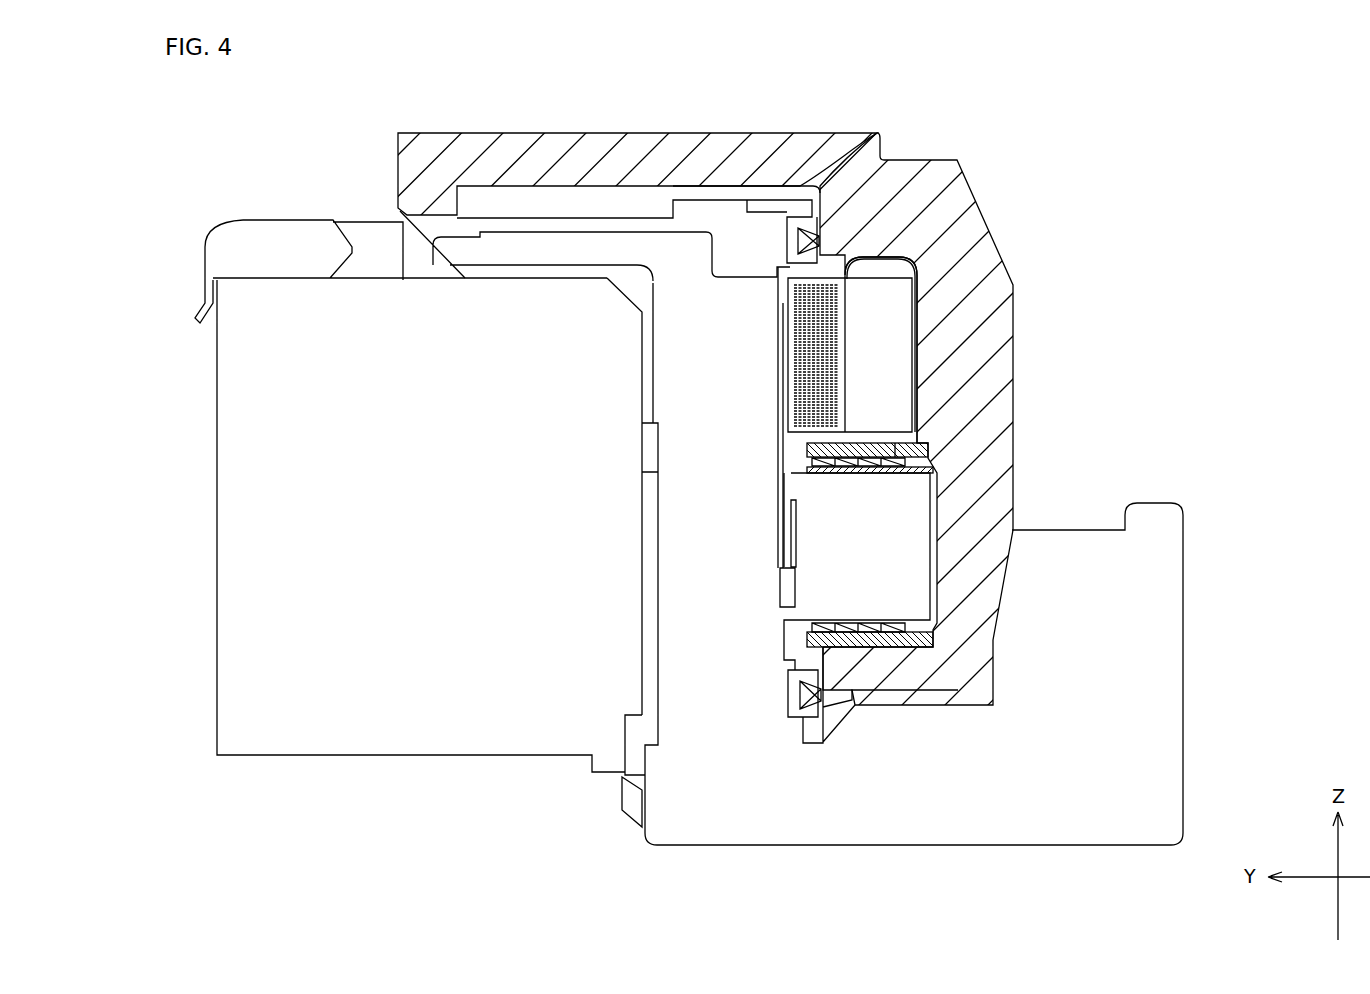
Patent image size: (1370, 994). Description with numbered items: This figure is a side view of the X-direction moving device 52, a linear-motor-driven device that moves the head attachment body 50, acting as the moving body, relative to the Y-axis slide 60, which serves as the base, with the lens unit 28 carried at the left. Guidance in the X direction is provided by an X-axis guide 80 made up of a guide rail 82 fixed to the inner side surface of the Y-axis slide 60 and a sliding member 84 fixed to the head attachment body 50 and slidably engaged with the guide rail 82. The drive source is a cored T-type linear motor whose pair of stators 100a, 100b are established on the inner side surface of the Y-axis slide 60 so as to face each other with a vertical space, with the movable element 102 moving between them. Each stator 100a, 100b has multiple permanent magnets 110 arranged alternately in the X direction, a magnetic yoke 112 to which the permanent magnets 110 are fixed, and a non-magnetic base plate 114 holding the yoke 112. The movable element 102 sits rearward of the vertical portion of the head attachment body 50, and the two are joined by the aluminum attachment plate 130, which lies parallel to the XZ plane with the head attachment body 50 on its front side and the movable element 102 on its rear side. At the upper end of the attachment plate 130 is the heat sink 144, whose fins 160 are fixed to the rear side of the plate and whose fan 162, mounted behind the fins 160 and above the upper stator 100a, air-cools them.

The lens unit 28 is at (282, 187).
The head attachment body 50 is at (683, 823).
The X-direction moving device 52 is at (976, 362).
The Y-axis slide 60 is at (770, 134).
The X-axis guide 80 is at (799, 190).
The guide rail 82 is at (924, 160).
The sliding member 84 is at (822, 236).
The stator 100a is at (966, 437).
The stator 100b is at (940, 633).
The movable element 102 is at (897, 537).
The permanent magnet 110 is at (936, 469).
The yoke 112 is at (952, 449).
The base plate 114 is at (947, 425).
The attachment plate 130 is at (783, 383).
The heat sink 144 is at (981, 315).
The fins 160 is at (945, 226).
The fan 162 is at (897, 293).